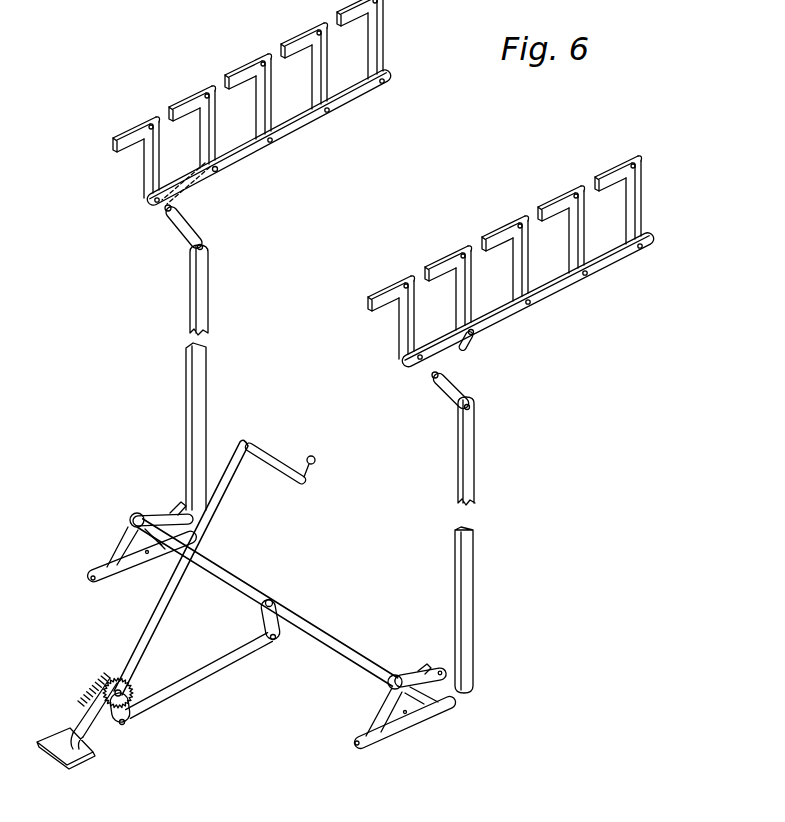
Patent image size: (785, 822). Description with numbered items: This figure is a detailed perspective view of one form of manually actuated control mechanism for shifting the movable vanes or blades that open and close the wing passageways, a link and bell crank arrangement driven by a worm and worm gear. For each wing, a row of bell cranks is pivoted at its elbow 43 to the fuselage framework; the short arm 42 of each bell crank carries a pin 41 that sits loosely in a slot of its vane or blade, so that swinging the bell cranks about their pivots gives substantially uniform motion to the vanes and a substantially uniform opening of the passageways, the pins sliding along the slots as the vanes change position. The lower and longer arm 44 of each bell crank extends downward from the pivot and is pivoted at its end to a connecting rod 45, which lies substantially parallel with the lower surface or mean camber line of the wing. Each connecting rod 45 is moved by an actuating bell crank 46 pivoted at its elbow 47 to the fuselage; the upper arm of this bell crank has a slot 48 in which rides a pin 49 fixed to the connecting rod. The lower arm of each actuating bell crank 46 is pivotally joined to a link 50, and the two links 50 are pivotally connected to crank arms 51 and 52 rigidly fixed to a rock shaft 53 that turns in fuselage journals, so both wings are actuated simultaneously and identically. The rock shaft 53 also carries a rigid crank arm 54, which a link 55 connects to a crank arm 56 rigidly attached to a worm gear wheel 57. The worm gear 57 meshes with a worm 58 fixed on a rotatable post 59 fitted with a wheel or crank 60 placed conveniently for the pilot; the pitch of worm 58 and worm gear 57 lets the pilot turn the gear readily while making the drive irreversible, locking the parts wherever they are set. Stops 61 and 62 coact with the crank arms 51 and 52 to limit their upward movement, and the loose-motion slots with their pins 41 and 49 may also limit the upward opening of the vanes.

The pin 41 is at (112, 133).
The short arm 42 is at (623, 182).
The pivot 43 is at (157, 115).
The longer arm 44 is at (160, 165).
The connecting rod 45 is at (347, 98).
The actuating bell crank 46 is at (185, 238).
The pivot 47 is at (160, 209).
The slot 48 is at (468, 349).
The pin 49 is at (218, 170).
The link 50 is at (207, 430).
The crank arm 51 is at (139, 513).
The crank arm 52 is at (450, 692).
The rock shaft 53 is at (281, 607).
The crank arm 54 is at (265, 621).
The link 55 is at (208, 676).
The crank arm 56 is at (130, 722).
The worm gear wheel 57 is at (131, 683).
The worm 58 is at (97, 688).
The post 59 is at (210, 535).
The wheel or crank 60 is at (275, 462).
The stop 61 is at (153, 506).
The stop 62 is at (427, 672).